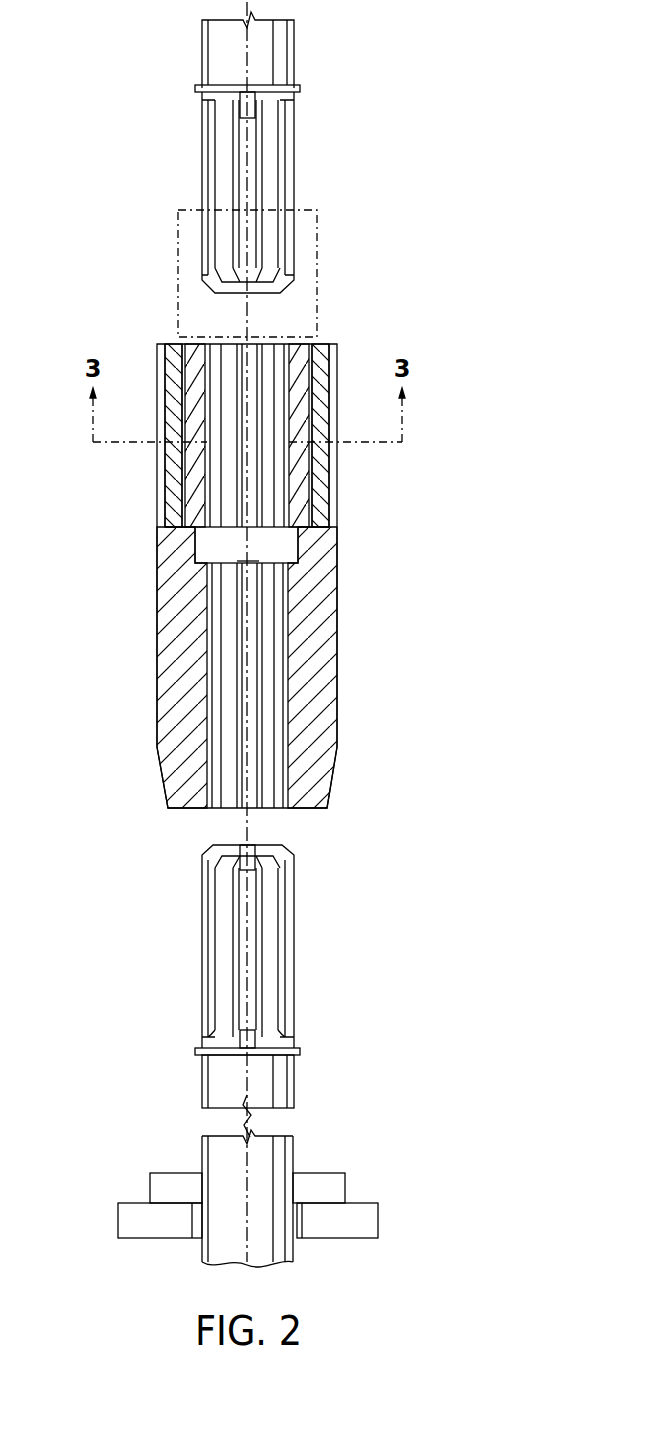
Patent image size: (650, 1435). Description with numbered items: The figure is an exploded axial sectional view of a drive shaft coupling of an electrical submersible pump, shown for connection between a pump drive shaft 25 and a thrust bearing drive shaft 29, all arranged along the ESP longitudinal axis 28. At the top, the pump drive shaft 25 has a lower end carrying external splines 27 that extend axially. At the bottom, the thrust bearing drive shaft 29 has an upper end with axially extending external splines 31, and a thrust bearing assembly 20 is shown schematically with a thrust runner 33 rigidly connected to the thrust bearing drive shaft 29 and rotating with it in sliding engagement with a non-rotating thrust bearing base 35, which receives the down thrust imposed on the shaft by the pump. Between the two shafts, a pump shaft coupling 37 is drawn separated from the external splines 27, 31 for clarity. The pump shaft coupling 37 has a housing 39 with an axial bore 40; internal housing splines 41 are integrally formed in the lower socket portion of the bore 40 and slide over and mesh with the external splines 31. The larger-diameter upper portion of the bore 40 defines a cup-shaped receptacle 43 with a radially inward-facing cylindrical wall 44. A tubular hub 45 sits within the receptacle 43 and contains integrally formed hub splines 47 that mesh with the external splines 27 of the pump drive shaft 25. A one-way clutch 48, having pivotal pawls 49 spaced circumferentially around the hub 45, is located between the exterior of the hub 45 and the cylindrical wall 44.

The thrust bearing assembly 20 is at (251, 1198).
The pump drive shaft 25 is at (220, 56).
The external splines 27 is at (288, 143).
The ESP longitudinal axis 28 is at (249, 3).
The thrust bearing drive shaft 29 is at (220, 1082).
The external splines 31 is at (205, 978).
The thrust runner 33 is at (160, 1190).
The thrust bearing base 35 is at (128, 1222).
The pump shaft coupling 37 is at (343, 548).
The housing 39 is at (330, 667).
The axial bore 40 is at (246, 545).
The housing splines 41 is at (270, 740).
The receptacle 43 is at (168, 522).
The cylindrical wall 44 is at (172, 482).
The hub 45 is at (300, 362).
The hub splines 47 is at (217, 365).
The one-way clutch 48 is at (322, 481).
The pivotal pawls 49 is at (165, 458).